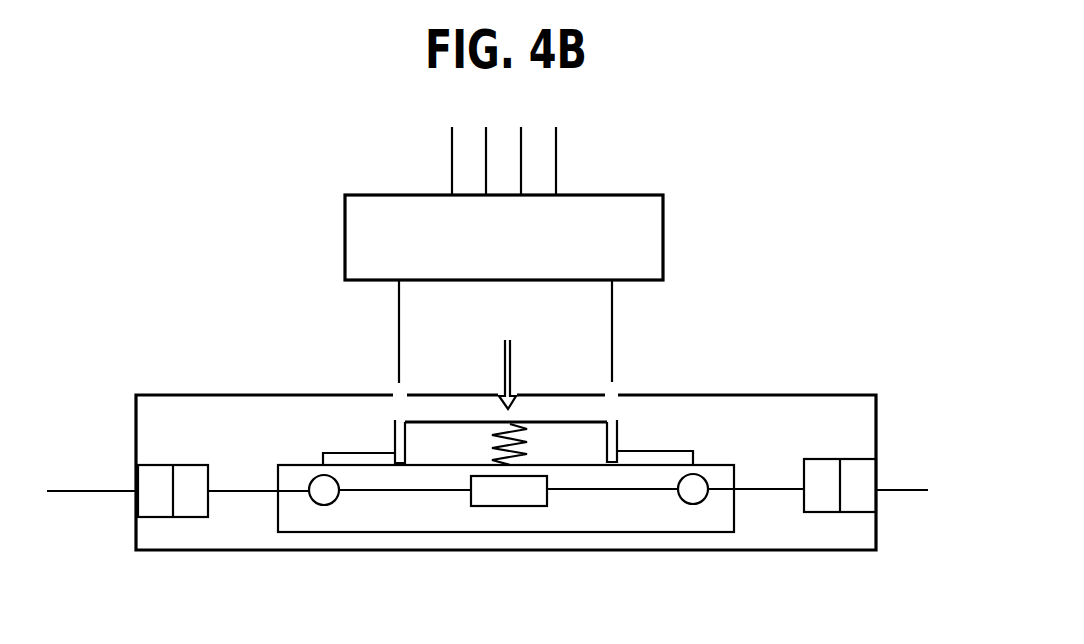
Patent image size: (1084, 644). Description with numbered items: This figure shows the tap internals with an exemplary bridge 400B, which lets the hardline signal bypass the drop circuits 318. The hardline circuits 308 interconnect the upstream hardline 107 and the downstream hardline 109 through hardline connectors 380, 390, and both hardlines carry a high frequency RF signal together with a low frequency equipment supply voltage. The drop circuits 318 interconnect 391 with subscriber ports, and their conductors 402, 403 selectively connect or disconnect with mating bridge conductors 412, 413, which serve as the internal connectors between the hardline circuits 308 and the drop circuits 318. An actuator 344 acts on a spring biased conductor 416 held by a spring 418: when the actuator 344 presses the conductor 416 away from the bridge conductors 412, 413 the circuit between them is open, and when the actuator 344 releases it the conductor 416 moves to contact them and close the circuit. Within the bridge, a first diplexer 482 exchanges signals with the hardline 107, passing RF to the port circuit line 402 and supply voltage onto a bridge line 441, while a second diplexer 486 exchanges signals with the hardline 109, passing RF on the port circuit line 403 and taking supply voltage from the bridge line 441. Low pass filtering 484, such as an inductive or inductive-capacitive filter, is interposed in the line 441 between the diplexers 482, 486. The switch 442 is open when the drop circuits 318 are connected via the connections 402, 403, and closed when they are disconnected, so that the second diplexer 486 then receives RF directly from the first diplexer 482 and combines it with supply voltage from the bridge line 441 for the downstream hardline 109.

The subscriber port interconnection 391 is at (438, 131).
The drop circuits 318 is at (631, 272).
The bridge 400B is at (766, 178).
The conductor 402 is at (395, 358).
The conductor 403 is at (615, 348).
The actuator 344 is at (519, 366).
The hardline circuits 308 is at (846, 428).
The spring biased conductor 416 is at (462, 420).
The internal connector 412 is at (392, 440).
The internal connector 413 is at (618, 437).
The spring 418 is at (528, 445).
The bridge line 441 is at (400, 489).
The upstream hardline 107 is at (62, 494).
The downstream hardline 109 is at (892, 490).
The hardline connector 380 is at (192, 517).
The hardline connector 390 is at (823, 508).
The diplexer 482 is at (333, 505).
The diplexer 486 is at (698, 500).
The low pass filtering 484 is at (524, 500).
The switch 442 is at (447, 436).